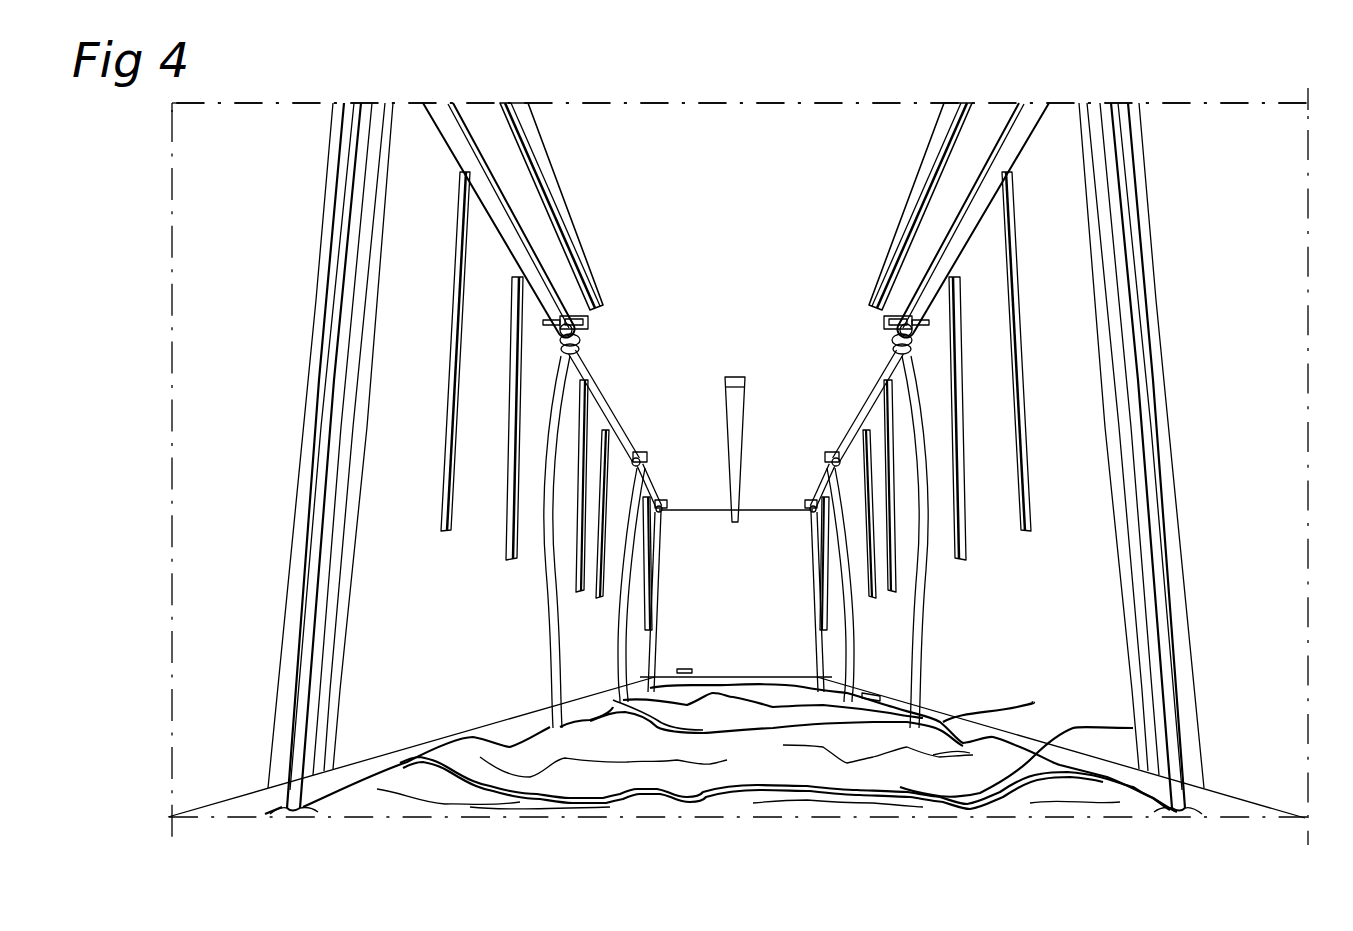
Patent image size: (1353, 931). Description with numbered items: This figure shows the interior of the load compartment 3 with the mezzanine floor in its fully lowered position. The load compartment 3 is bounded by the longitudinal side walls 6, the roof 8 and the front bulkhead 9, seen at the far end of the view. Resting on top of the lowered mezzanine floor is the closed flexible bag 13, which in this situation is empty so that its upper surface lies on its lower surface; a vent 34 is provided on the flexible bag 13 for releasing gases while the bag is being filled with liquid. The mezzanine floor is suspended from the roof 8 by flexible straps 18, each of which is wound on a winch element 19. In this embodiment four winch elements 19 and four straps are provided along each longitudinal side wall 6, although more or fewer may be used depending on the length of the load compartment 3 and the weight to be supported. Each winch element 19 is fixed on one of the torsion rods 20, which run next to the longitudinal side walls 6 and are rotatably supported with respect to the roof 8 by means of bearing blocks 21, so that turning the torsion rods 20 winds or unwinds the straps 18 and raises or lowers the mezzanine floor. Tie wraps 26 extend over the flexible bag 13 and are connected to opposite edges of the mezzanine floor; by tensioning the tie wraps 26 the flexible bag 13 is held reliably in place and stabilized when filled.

The load compartment 3 is at (1075, 478).
The longitudinal side walls 6 is at (382, 575).
The roof 8 is at (745, 145).
The front bulkhead 9 is at (740, 630).
The flexible bag 13 is at (1133, 728).
The flexible straps 18 is at (302, 647).
The winch element 19 is at (582, 345).
The torsion rods 20 is at (530, 272).
The bearing blocks 21 is at (590, 322).
The tie wraps 26 is at (1027, 763).
The vent 34 is at (877, 693).